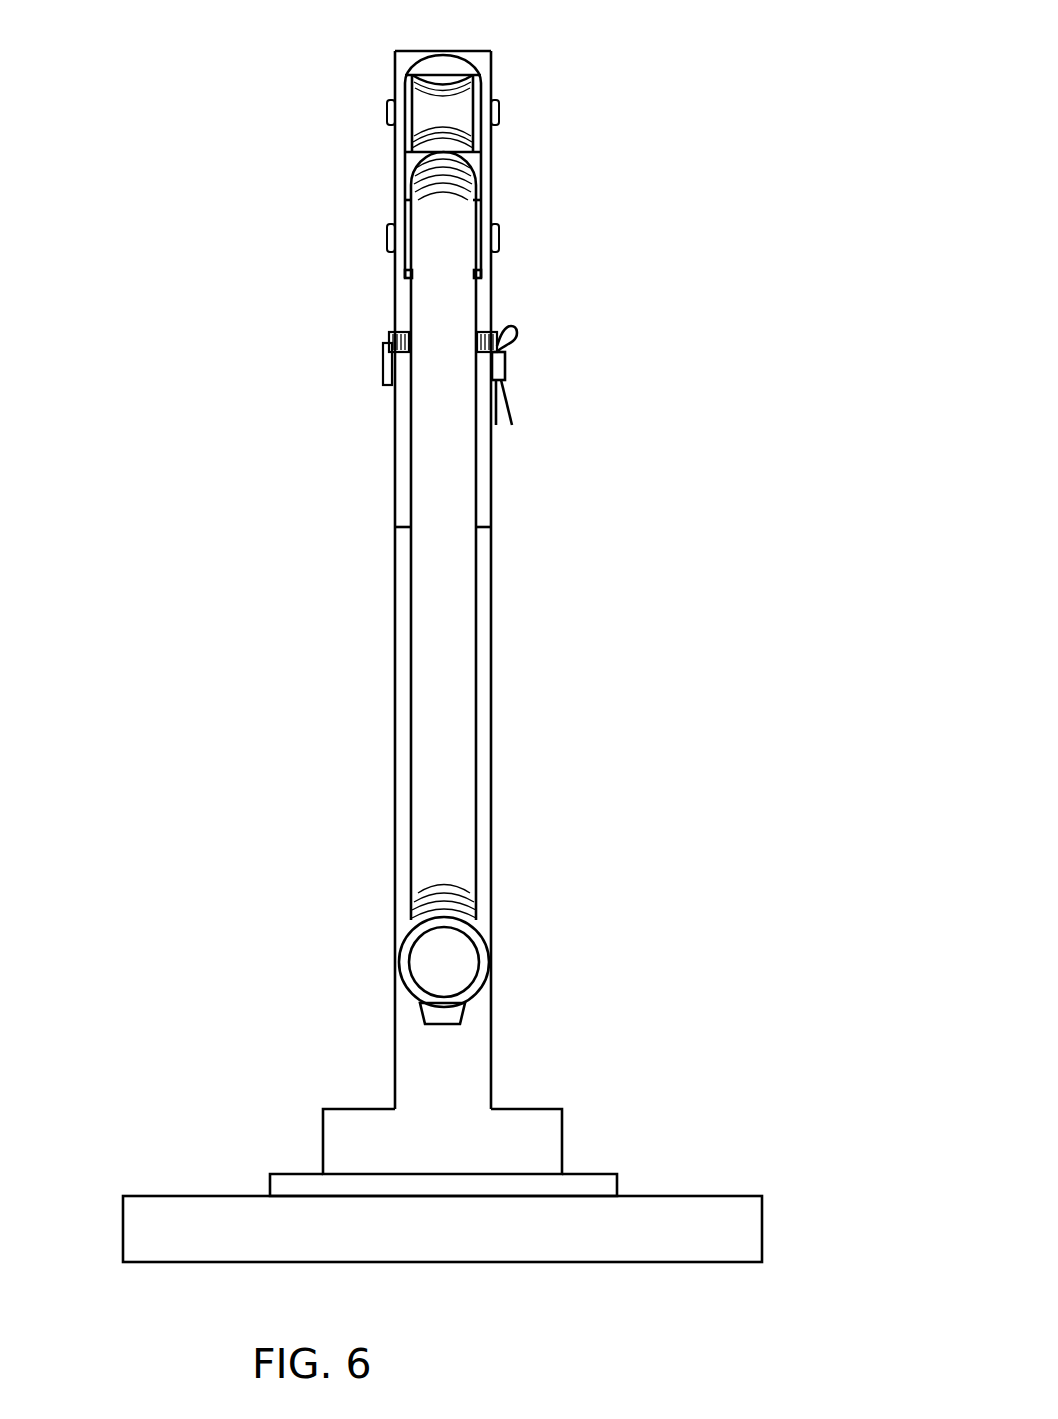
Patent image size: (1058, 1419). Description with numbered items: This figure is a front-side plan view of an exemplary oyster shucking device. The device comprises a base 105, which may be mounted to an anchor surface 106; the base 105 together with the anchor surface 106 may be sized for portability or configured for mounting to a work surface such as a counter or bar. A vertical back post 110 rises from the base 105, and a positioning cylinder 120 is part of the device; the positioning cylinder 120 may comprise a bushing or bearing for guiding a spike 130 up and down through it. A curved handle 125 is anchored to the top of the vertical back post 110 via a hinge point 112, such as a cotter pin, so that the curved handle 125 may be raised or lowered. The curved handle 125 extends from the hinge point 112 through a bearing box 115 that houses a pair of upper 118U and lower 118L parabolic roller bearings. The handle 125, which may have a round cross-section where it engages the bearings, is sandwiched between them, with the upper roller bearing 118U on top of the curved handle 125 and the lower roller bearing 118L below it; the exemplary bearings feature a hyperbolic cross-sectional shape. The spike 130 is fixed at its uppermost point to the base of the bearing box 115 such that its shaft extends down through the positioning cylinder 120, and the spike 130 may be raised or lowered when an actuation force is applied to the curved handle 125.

The base 105 is at (290, 1178).
The anchor surface 106 is at (155, 1207).
The vertical back post 110 is at (405, 1032).
The hinge point 112 is at (383, 365).
The bearing box 115 is at (396, 57).
The upper parabolic roller bearing 118U is at (458, 107).
The lower parabolic roller bearing 118L is at (480, 222).
The positioning cylinder 120 is at (485, 499).
The curved handle 125 is at (422, 622).
The spike 130 is at (430, 1012).